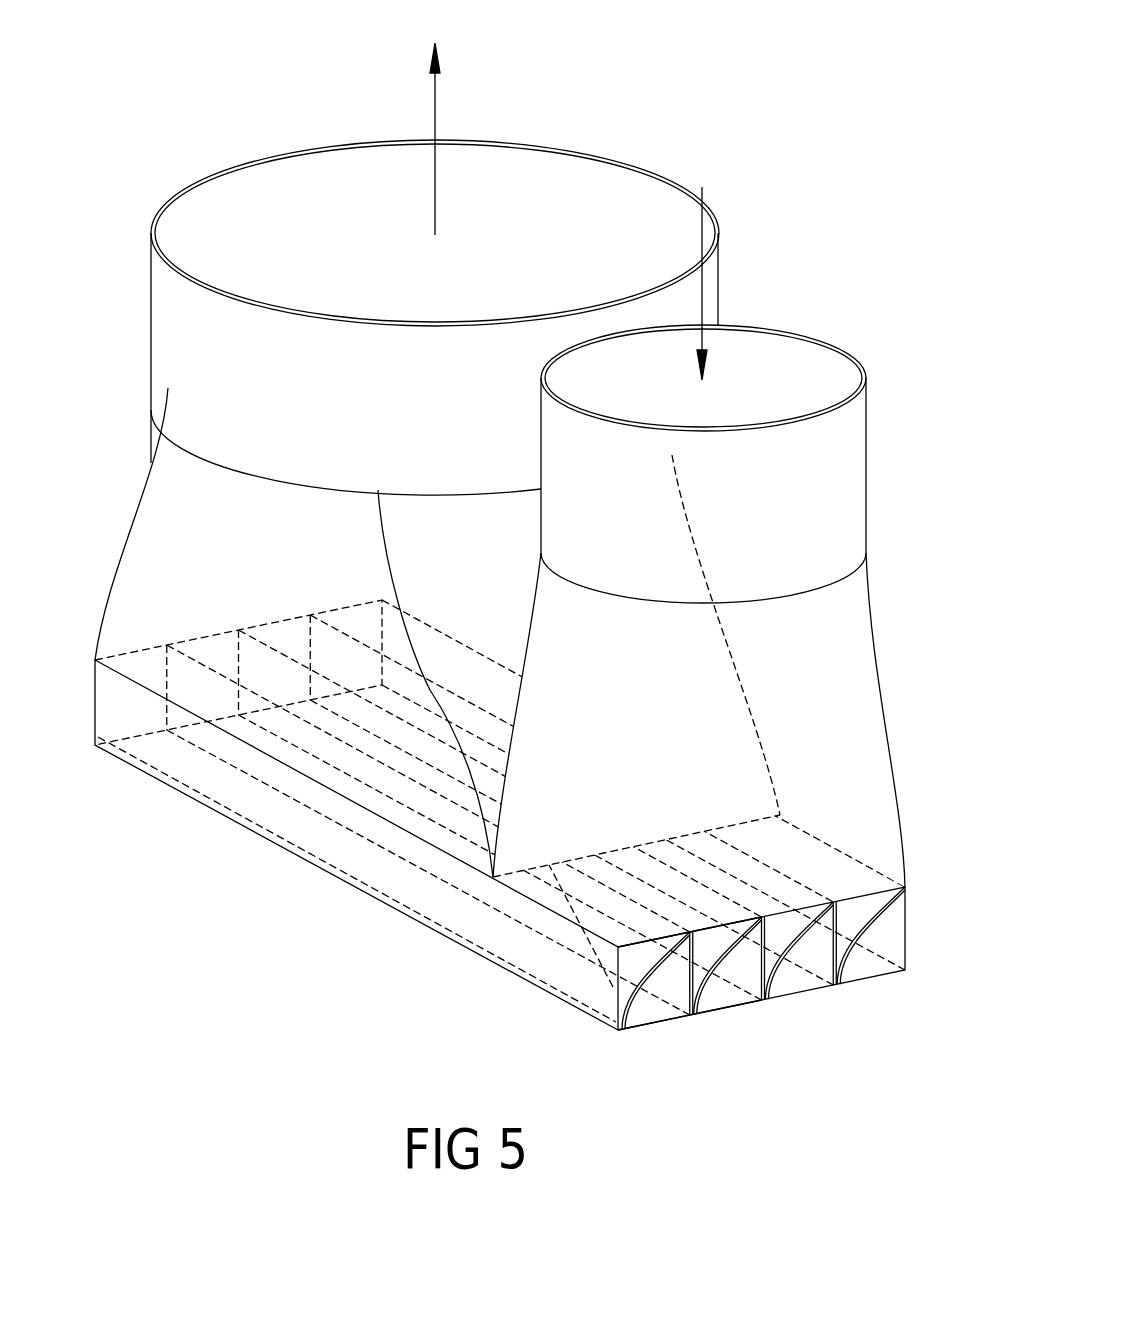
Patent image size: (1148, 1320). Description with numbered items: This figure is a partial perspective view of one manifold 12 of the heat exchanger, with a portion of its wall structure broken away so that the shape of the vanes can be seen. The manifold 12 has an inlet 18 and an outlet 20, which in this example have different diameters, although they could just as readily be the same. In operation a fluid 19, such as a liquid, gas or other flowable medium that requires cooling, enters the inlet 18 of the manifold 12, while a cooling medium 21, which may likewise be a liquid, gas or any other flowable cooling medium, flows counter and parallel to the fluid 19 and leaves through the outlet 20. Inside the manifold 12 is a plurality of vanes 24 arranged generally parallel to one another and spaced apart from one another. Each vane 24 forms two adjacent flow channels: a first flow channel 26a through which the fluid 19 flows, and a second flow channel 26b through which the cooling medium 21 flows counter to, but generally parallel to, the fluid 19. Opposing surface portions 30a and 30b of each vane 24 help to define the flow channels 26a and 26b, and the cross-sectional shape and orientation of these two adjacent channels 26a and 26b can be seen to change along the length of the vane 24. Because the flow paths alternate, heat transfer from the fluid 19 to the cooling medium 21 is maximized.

The manifold 12 is at (867, 331).
The inlet 18 is at (843, 480).
The fluid 19 is at (703, 298).
The outlet 20 is at (165, 355).
The cooling medium 21 is at (435, 113).
The vane 24 is at (598, 952).
The first flow channel 26a is at (678, 965).
The second flow channel 26b is at (665, 1010).
The opposing surface portion 30a is at (628, 995).
The opposing surface portion 30b is at (668, 995).